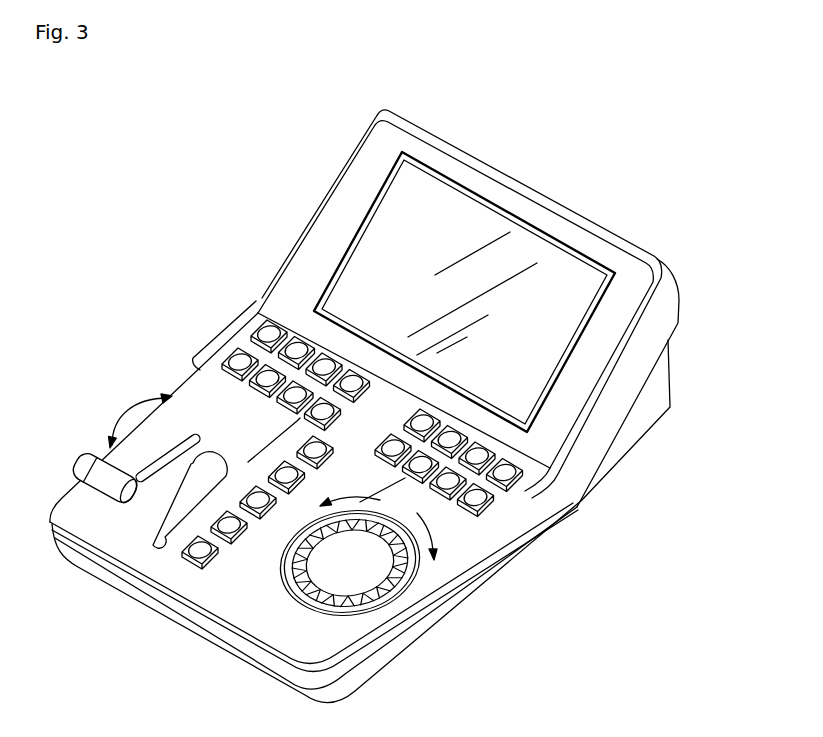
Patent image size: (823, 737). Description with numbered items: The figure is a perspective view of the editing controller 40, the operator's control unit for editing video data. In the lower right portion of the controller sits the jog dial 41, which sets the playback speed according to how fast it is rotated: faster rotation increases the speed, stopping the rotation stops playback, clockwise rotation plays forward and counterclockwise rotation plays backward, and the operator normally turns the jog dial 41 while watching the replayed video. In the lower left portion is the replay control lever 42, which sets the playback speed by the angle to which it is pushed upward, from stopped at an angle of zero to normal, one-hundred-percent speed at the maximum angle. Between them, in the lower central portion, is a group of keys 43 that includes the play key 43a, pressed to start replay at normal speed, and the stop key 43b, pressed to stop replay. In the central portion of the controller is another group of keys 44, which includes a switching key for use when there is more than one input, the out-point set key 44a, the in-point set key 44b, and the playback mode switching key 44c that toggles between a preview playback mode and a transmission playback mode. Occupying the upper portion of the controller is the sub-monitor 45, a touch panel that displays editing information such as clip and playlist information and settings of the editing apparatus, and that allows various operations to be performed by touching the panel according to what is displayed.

The editing controller 40 is at (510, 128).
The jog dial 41 is at (370, 573).
The replay control lever 42 is at (79, 455).
The group of keys 43 is at (150, 541).
The play key 43a is at (259, 502).
The stop key 43b is at (232, 524).
The group of keys 44 is at (231, 326).
The out-point set key 44a is at (453, 435).
The in-point set key 44b is at (424, 419).
The playback mode switching key 44c is at (400, 478).
The sub-monitor 45 is at (525, 243).